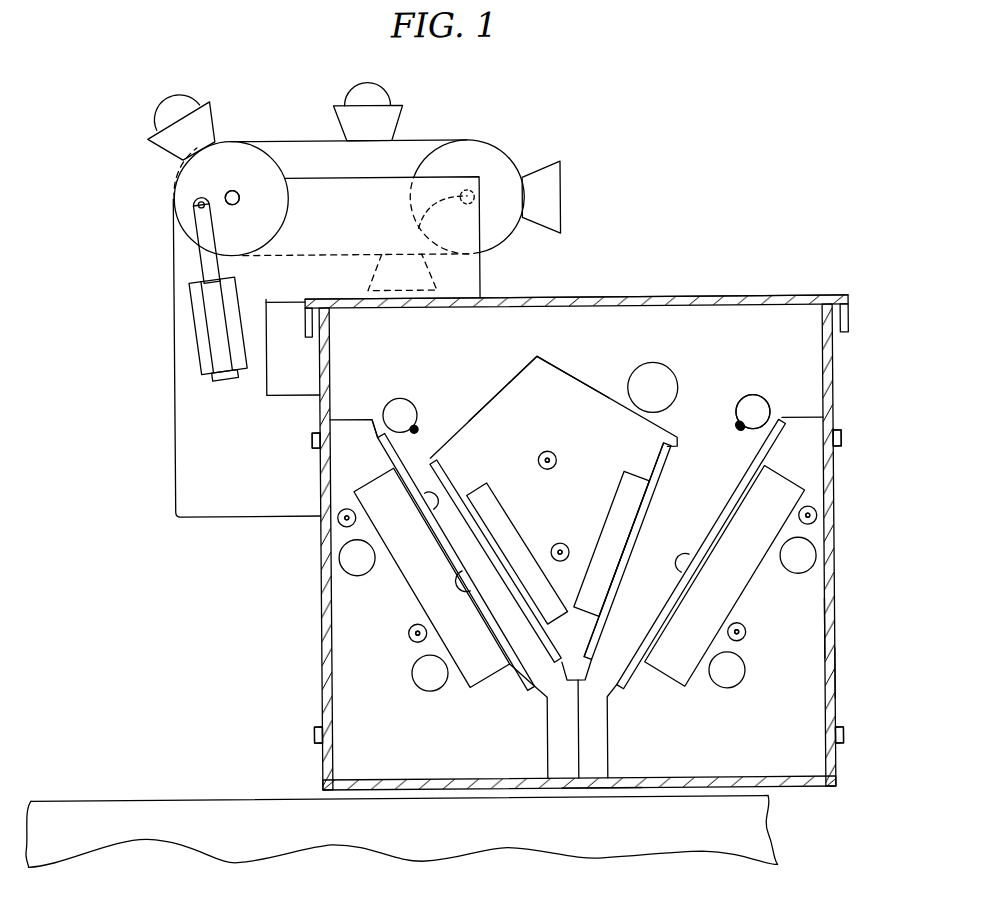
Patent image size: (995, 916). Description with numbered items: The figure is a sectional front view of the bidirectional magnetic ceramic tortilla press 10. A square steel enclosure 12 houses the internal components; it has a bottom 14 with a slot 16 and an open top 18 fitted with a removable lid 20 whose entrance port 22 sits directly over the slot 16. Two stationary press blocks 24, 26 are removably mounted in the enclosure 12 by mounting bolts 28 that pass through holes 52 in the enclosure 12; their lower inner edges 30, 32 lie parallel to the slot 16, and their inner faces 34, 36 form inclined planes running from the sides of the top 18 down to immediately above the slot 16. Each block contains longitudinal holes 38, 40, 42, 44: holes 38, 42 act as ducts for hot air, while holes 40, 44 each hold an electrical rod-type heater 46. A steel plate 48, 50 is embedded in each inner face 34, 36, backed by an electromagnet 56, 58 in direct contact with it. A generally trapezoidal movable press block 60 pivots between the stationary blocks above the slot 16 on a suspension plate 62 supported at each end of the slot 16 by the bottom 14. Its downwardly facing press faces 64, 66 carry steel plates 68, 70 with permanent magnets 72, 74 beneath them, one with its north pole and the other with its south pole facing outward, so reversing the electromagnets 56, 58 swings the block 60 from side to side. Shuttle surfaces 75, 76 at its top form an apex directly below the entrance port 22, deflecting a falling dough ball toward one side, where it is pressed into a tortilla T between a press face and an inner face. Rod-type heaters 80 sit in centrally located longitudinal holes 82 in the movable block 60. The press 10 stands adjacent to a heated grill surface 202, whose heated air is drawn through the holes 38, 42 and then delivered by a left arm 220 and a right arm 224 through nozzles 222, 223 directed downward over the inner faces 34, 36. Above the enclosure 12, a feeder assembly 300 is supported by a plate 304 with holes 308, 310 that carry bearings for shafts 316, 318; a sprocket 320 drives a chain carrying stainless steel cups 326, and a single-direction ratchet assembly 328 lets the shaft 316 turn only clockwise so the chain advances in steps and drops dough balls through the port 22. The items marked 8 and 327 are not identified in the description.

The ball 8 is at (162, 127).
The bidirectional magnetic ceramic tortilla press 10 is at (182, 630).
The square steel enclosure 12 is at (830, 628).
The bottom 14 is at (796, 790).
The slot 16 is at (598, 789).
The open top 18 is at (814, 346).
The removable lid 20 is at (792, 297).
The entrance port 22 is at (628, 297).
The stationary press block 24 is at (331, 690).
The stationary press block 26 is at (824, 666).
The mounting bolts 28 is at (313, 441).
The lower inner edge 30 is at (546, 777).
The lower inner edge 32 is at (607, 777).
The inner face 34 is at (382, 418).
The inner face 36 is at (784, 420).
The longitudinal hole 38 is at (339, 560).
The longitudinal hole 40 is at (356, 518).
The longitudinal hole 42 is at (816, 557).
The longitudinal hole 44 is at (799, 515).
The electrical rod-type heater 46 is at (338, 514).
The steel plate 48 is at (472, 584).
The steel plate 50 is at (685, 573).
The holes 52 is at (313, 432).
The electromagnet 56 is at (442, 570).
The electromagnet 58 is at (753, 572).
The movable press block 60 is at (557, 398).
The suspension plate 62 is at (580, 718).
The left press face 64 is at (390, 470).
The right press face 66 is at (648, 550).
The steel plate 68 is at (450, 470).
The steel plate 70 is at (664, 450).
The permanent magnet 72 is at (508, 512).
The permanent magnet 74 is at (622, 520).
The shuttle surface 75 is at (518, 378).
The shuttle surface 76 is at (570, 378).
The rod-type heater 80 is at (550, 451).
The longitudinal hole 82 is at (557, 459).
The tortilla T is at (514, 628).
The heated grill surface 202 is at (107, 797).
The left arm 220 is at (401, 397).
The nozzles 222 is at (738, 427).
The nozzles 223 is at (419, 429).
The right arm 224 is at (754, 396).
The feeder assembly 300 is at (104, 258).
The plate 304 is at (176, 453).
The hole 308 is at (243, 195).
The hole 310 is at (421, 228).
The shaft 316 is at (228, 196).
The shaft 318 is at (472, 190).
The sprocket 320 is at (270, 237).
The stainless steel cup 326 is at (216, 122).
The central ball hopper 327 is at (420, 138).
The single-direction ratchet assembly 328 is at (176, 201).